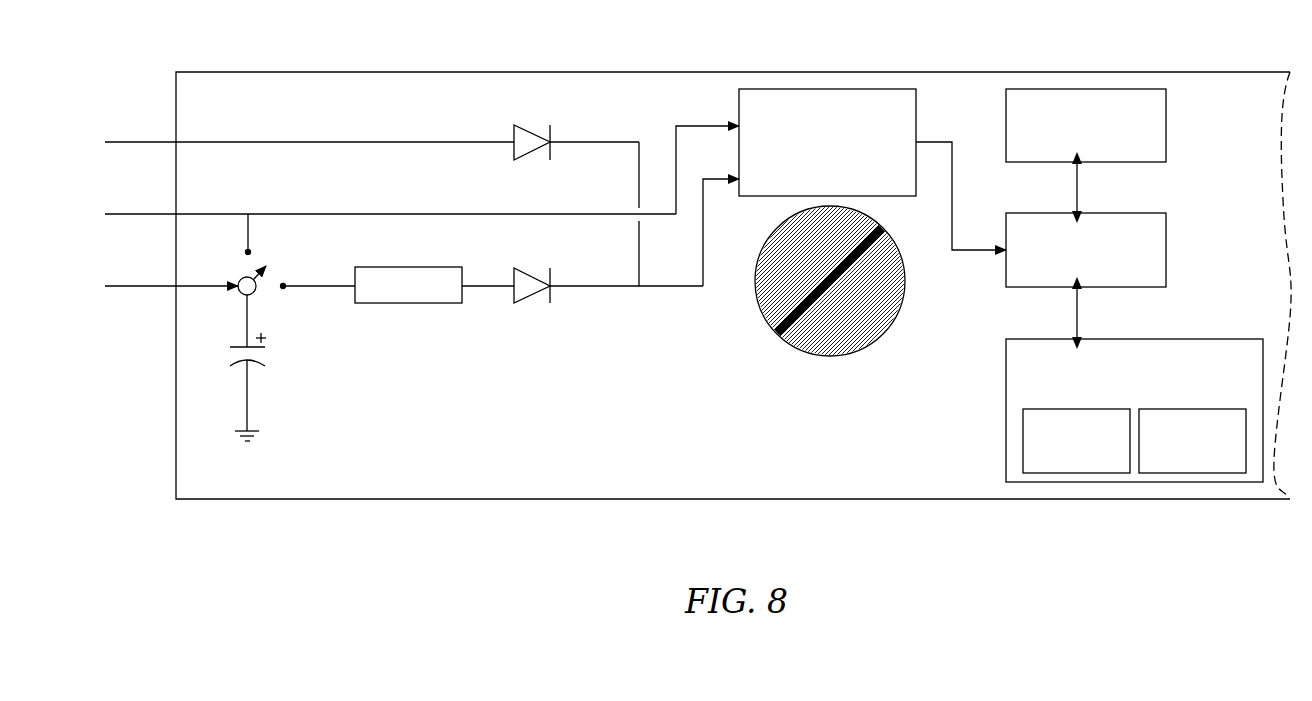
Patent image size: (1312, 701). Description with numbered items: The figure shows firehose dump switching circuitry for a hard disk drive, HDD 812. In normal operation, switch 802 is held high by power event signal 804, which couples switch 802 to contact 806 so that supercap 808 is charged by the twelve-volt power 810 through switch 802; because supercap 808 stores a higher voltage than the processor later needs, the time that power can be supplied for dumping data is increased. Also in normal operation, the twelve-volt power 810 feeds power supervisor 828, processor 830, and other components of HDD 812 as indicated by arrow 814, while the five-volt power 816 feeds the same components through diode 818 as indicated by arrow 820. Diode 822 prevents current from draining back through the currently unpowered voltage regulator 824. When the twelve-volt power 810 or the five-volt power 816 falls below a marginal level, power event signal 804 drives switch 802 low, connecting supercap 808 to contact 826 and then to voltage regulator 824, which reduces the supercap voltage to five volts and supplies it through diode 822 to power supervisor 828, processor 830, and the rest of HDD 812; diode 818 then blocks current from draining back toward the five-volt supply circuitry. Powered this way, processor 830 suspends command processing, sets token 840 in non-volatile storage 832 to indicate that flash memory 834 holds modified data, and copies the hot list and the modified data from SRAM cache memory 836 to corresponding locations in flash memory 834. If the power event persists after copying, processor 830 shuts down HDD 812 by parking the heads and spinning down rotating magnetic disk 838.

The switch 802 is at (276, 268).
The power event signal 804 is at (97, 286).
The contact 806 is at (245, 252).
The supercap 808 is at (274, 358).
The +12 volt power 810 is at (97, 214).
The HDD 812 is at (760, 72).
The arrow 814 is at (711, 124).
The +5 volt power 816 is at (97, 142).
The diode 818 is at (535, 124).
The arrow 820 is at (717, 178).
The diode 822 is at (535, 267).
The voltage regulator 824 is at (428, 266).
The contact 826 is at (285, 292).
The power supervisor 828 is at (919, 112).
The processor 830 is at (1168, 236).
The non-volatile storage 832 is at (1224, 339).
The flash memory 834 is at (1056, 409).
The SRAM cache memory 836 is at (1168, 112).
The rotating magnetic disk 838 is at (760, 310).
The token 840 is at (1212, 409).